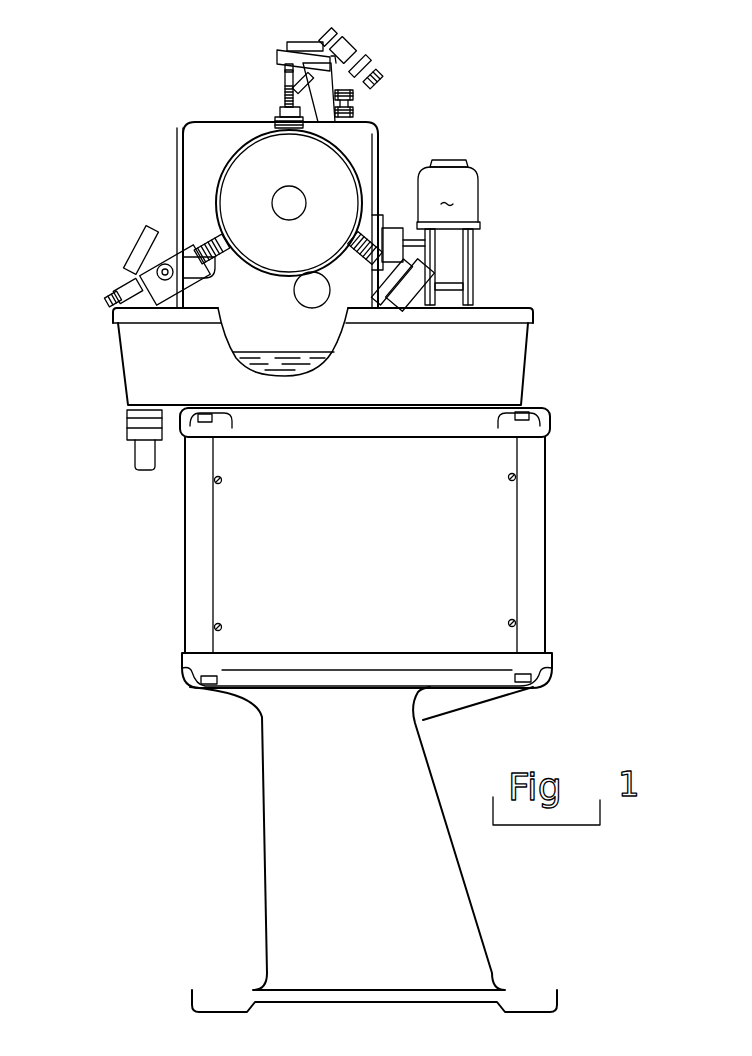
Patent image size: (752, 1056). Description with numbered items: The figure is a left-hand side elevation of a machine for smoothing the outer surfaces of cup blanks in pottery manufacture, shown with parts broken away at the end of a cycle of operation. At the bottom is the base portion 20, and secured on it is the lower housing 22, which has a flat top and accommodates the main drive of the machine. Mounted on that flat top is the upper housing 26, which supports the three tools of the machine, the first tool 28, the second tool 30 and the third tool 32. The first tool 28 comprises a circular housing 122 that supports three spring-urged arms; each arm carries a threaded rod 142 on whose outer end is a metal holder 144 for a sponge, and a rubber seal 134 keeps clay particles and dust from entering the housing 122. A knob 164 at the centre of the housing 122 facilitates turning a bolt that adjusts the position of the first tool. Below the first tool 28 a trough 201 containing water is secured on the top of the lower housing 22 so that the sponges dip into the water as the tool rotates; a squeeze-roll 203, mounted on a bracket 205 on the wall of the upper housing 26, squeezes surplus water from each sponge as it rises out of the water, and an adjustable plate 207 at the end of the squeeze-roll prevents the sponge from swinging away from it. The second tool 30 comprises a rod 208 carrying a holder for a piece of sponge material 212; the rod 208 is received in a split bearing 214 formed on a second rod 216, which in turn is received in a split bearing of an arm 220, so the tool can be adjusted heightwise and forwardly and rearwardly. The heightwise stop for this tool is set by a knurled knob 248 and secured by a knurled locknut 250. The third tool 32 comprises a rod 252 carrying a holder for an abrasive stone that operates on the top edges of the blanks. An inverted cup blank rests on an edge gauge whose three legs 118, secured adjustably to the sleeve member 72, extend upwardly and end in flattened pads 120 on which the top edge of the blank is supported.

The base portion 20 is at (268, 833).
The lower housing 22 is at (193, 555).
The upper housing 26 is at (183, 180).
The first tool 28 is at (226, 146).
The second tool 30 is at (374, 54).
The third tool 32 is at (408, 221).
The sleeve member 72 is at (465, 287).
The legs 118 is at (449, 267).
The pad 120 is at (480, 226).
The circular housing 122 is at (232, 168).
The rubber seal 134 is at (280, 120).
The rod 142 is at (285, 80).
The metal holder 144 is at (278, 54).
The knob 164 is at (299, 193).
The trough 201 is at (192, 388).
The squeeze-roll 203 is at (172, 245).
The bracket 205 is at (207, 276).
The plate 207 is at (140, 279).
The rod 208 is at (333, 38).
The sponge material 212 is at (388, 62).
The split bearing 214 is at (354, 45).
The second rod 216 is at (303, 93).
The arm 220 is at (333, 137).
The knurled knob 248 is at (355, 96).
The knurled locknut 250 is at (354, 112).
The rod 252 is at (418, 243).